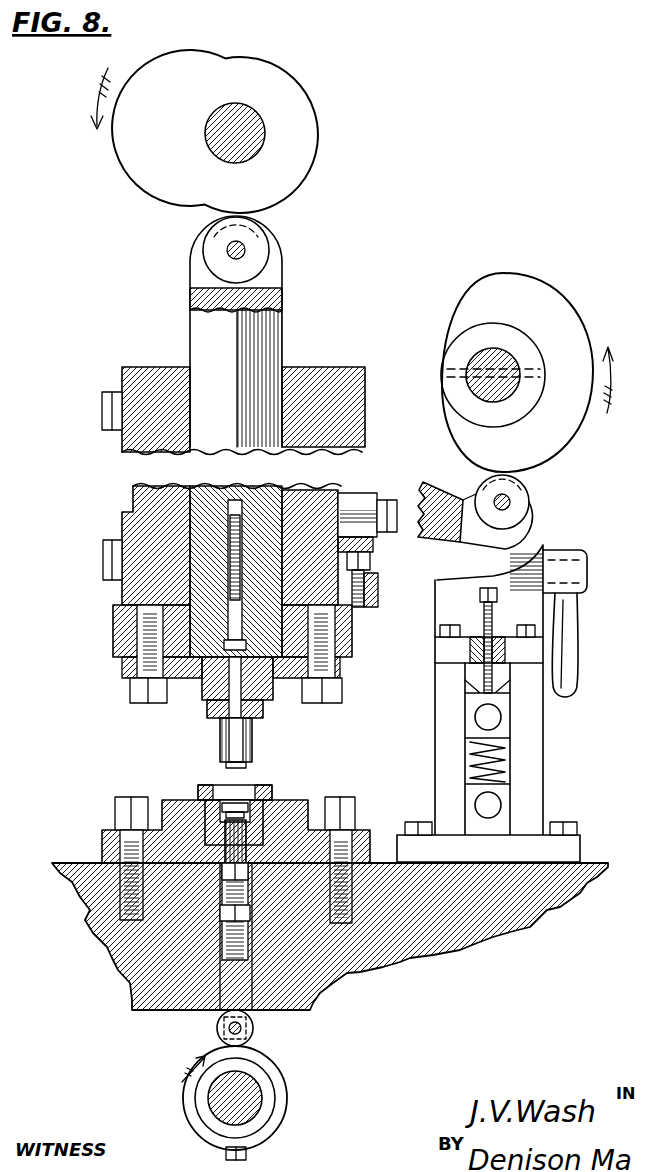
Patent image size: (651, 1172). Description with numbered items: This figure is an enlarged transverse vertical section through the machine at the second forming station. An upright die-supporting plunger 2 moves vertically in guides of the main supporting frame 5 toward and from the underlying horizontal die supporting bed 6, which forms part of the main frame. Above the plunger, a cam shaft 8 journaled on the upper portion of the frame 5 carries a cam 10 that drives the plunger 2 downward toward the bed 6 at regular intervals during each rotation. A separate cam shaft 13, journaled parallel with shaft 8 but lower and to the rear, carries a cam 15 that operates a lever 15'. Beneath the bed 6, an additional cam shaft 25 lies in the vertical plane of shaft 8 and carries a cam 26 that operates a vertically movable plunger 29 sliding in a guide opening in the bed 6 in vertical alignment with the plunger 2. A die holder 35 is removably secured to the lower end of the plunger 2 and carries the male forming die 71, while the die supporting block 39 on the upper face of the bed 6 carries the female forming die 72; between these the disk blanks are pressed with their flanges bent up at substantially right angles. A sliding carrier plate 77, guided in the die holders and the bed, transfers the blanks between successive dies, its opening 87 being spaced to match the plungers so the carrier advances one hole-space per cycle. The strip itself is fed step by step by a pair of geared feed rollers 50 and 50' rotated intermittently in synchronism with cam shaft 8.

The die-supporting plunger 2 is at (247, 396).
The main supporting frame 5 is at (137, 485).
The die supporting bed 6 is at (397, 952).
The cam shaft 8 is at (266, 133).
The cam 10 is at (131, 167).
The cam shaft 13 is at (472, 378).
The cam 15 is at (527, 372).
The lever 15' is at (474, 524).
The cam shaft 25 is at (222, 1099).
The cam 26 is at (283, 1080).
The vertically movable plunger 29 is at (199, 1010).
The die holder 35 is at (199, 664).
The die supporting block 39 is at (305, 801).
The feed roller 50 is at (506, 805).
The feed roller 50' is at (508, 717).
The male forming die 71 is at (220, 745).
The female forming die 72 is at (226, 805).
The carrier plate 77 is at (273, 790).
The opening 87 is at (243, 795).